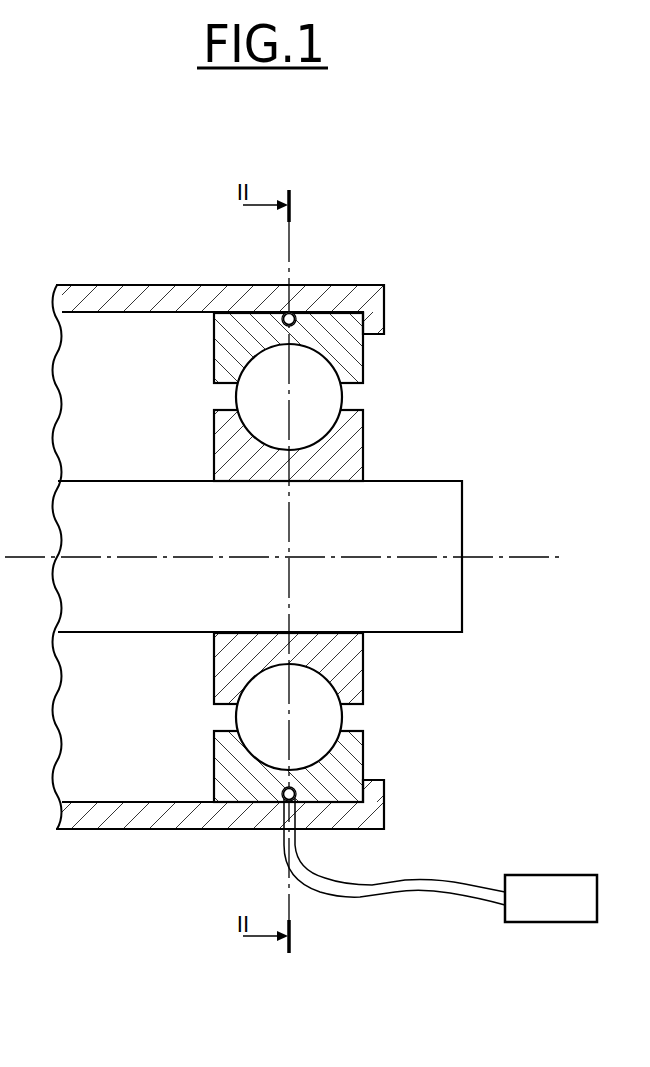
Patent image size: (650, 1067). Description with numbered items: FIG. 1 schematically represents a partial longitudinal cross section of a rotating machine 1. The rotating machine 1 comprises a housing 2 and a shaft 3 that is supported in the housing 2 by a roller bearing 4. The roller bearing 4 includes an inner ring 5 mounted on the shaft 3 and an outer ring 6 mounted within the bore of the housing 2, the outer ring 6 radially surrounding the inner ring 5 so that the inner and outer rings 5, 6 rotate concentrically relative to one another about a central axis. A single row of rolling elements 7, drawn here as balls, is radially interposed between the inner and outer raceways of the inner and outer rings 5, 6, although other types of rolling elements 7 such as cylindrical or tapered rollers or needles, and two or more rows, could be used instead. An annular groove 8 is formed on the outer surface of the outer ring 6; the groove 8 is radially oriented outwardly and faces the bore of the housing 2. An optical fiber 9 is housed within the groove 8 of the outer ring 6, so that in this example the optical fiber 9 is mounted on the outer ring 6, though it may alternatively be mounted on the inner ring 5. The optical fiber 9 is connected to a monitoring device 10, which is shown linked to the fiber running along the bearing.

The rotating machine 1 is at (161, 264).
The housing 2 is at (363, 290).
The shaft 3 is at (455, 526).
The roller bearing 4 is at (378, 394).
The inner ring 5 is at (365, 443).
The outer ring 6 is at (365, 348).
The rolling elements 7 is at (278, 409).
The annular groove 8 is at (292, 313).
The optical fiber 9 is at (284, 317).
The monitoring device 10 is at (440, 860).